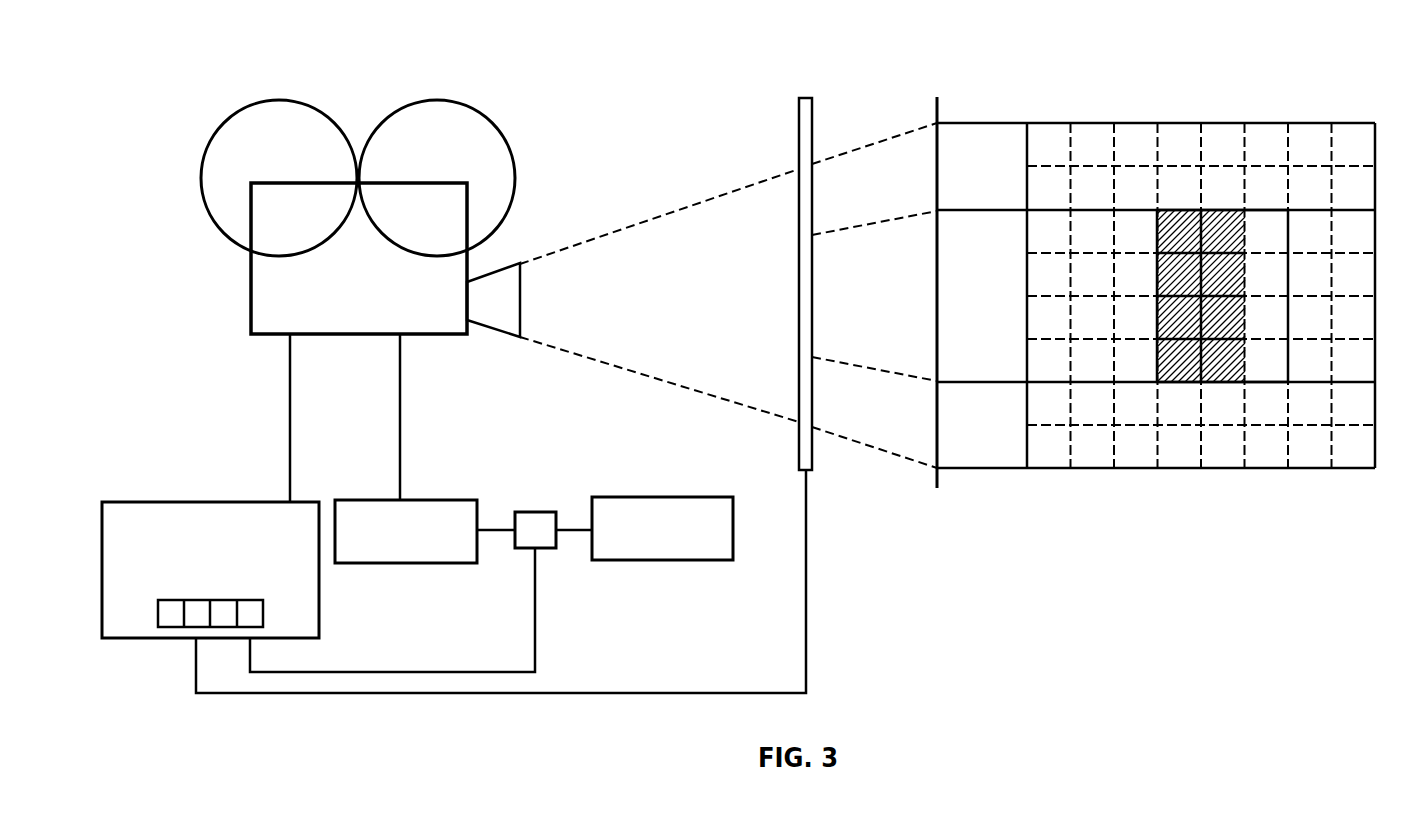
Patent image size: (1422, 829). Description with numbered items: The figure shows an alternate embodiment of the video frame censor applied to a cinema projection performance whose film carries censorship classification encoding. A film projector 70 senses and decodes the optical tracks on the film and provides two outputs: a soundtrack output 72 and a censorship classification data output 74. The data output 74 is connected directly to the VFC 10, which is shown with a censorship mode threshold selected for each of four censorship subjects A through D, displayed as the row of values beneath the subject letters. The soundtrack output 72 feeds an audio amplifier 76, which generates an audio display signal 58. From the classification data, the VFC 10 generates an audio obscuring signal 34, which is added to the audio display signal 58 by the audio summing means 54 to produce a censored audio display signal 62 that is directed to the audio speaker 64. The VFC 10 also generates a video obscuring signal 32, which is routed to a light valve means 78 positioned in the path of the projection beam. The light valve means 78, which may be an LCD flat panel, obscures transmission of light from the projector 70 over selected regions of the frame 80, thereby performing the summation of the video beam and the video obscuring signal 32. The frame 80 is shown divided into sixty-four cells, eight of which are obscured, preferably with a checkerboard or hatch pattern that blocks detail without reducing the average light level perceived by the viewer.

The VFC 10 is at (135, 502).
The video obscuring signal 32 is at (235, 695).
The audio obscuring signal 34 is at (338, 672).
The audio summing means 54 is at (528, 512).
The audio display signal 58 is at (498, 532).
The censored audio display signal 62 is at (573, 532).
The audio speaker 64 is at (645, 497).
The film projector 70 is at (251, 297).
The soundtrack output 72 is at (400, 404).
The censorship classification data output 74 is at (290, 404).
The audio amplifier 76 is at (400, 565).
The light valve means 78 is at (799, 110).
The frame 80 is at (1348, 468).